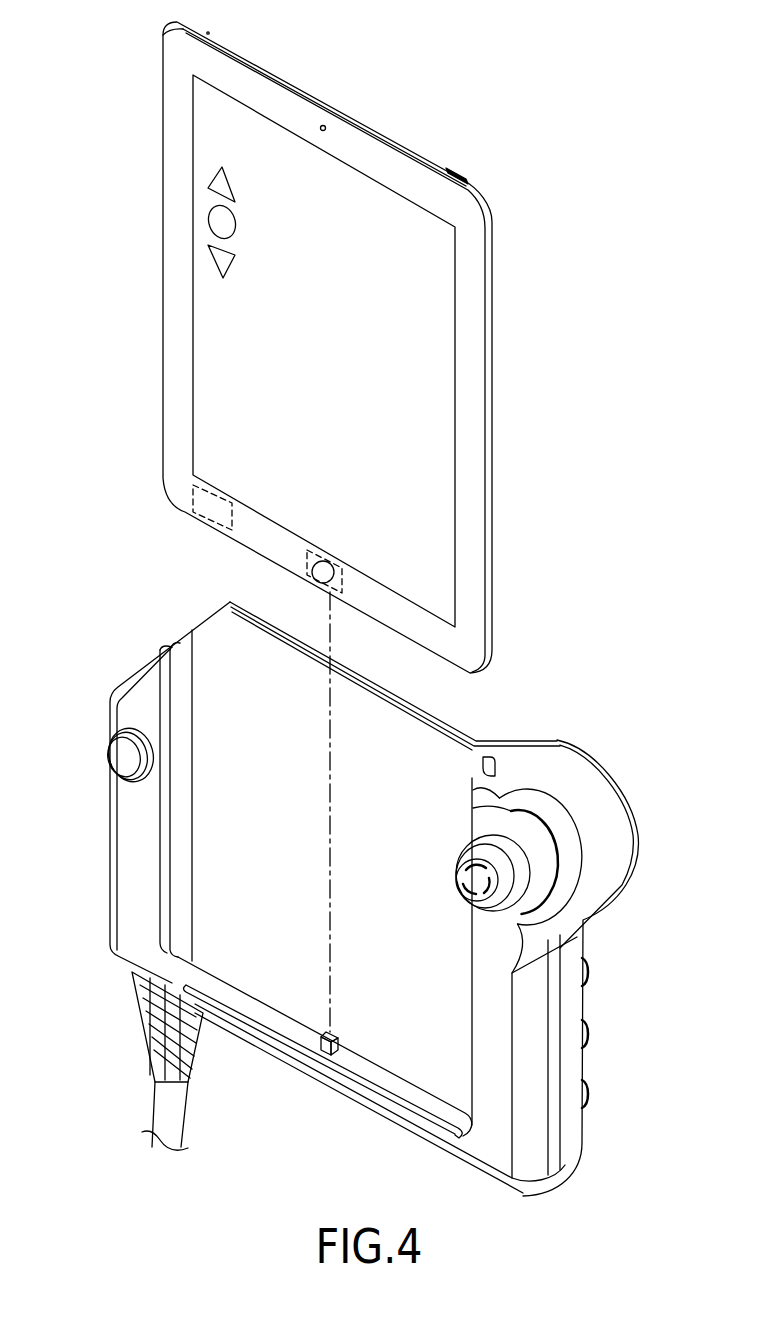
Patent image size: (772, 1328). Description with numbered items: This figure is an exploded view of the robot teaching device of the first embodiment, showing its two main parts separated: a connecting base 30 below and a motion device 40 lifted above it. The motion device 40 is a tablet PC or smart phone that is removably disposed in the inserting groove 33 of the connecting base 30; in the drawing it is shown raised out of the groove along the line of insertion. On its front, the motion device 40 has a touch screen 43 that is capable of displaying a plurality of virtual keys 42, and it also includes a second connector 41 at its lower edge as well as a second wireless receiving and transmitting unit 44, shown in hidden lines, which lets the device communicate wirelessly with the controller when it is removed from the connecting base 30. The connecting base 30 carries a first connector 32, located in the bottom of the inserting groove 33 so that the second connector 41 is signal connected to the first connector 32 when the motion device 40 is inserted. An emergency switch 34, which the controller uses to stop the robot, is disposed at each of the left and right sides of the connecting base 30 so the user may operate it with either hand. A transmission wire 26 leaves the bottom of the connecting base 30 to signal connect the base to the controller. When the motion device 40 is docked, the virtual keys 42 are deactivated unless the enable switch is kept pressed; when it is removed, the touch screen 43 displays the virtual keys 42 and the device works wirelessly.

The transmission wire 26 is at (162, 1110).
The connecting base 30 is at (353, 884).
The first connector 32 is at (327, 1048).
The inserting groove 33 is at (180, 657).
The emergency switch 34 is at (463, 870).
The motion device 40 is at (403, 132).
The second connector 41 is at (341, 583).
The virtual keys 42 is at (218, 180).
The touch screen 43 is at (220, 345).
The second wireless receiving and transmitting unit 44 is at (193, 488).